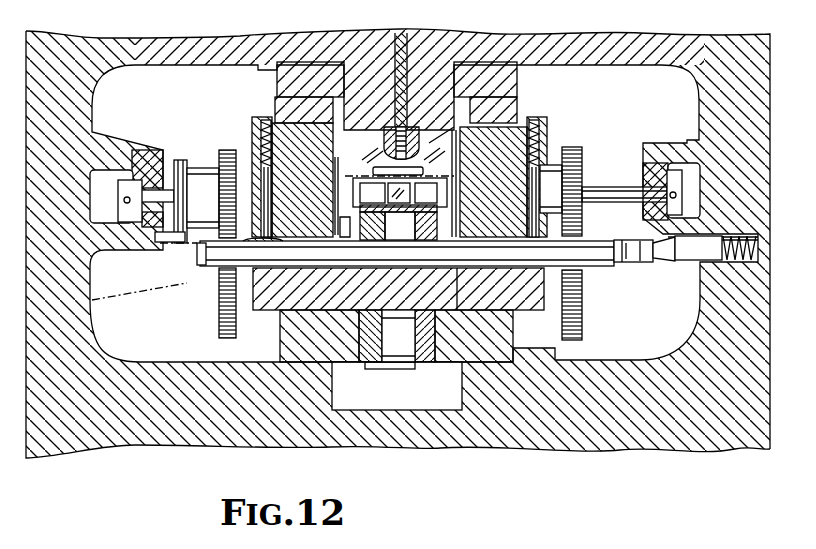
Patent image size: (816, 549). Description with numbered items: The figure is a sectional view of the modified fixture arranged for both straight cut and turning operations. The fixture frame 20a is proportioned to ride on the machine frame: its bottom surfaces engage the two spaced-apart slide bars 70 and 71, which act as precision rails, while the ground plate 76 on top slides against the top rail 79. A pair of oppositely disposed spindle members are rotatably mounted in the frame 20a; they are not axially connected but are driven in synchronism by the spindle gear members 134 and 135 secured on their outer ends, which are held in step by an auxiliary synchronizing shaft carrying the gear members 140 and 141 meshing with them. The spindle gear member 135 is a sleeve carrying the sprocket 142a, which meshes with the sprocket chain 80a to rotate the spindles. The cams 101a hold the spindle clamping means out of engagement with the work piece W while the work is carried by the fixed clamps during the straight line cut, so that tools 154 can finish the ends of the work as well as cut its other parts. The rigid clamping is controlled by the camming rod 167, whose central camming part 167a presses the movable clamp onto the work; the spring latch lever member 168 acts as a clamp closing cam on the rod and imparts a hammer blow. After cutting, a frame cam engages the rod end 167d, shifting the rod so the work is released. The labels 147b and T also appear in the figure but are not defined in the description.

The fixture frame 20a is at (398, 274).
The top rail 79 is at (309, 73).
The ground plate 76 is at (505, 72).
The tool 154 is at (487, 167).
The work piece W is at (424, 176).
The slide bar 71 is at (300, 372).
The slide bar 70 is at (505, 380).
The central camming part 167a is at (426, 366).
The camming rod 167 is at (600, 268).
The rod end 167d is at (210, 270).
The spring latch lever member 168 is at (640, 240).
The sprocket 142a is at (178, 167).
The spindle gear member 135 is at (230, 147).
The gear member 141 is at (236, 333).
The spindle gear member 134 is at (577, 165).
The gear member 140 is at (582, 333).
The bearing boss 147b is at (128, 168).
The cam 101a is at (130, 216).
The sprocket chain 80a is at (167, 246).
The tool axis T is at (144, 271).